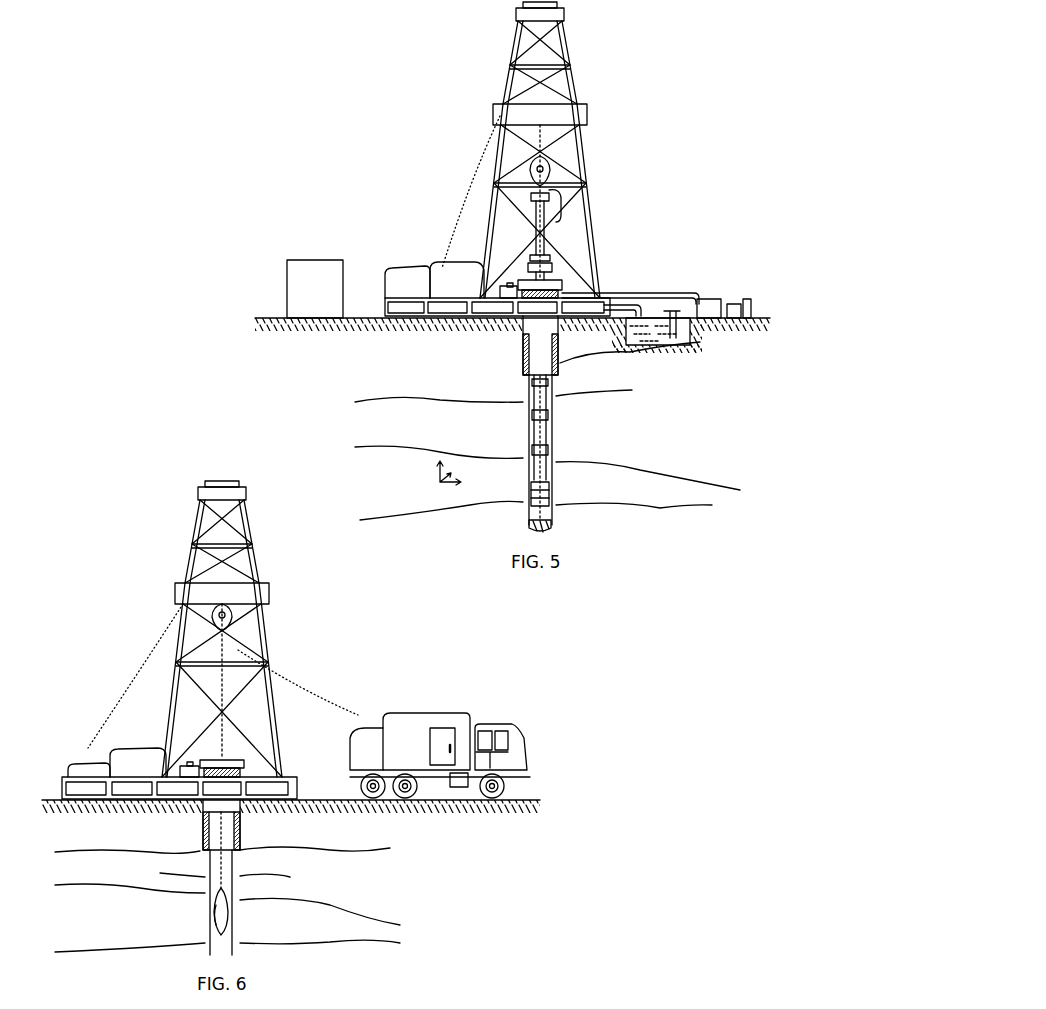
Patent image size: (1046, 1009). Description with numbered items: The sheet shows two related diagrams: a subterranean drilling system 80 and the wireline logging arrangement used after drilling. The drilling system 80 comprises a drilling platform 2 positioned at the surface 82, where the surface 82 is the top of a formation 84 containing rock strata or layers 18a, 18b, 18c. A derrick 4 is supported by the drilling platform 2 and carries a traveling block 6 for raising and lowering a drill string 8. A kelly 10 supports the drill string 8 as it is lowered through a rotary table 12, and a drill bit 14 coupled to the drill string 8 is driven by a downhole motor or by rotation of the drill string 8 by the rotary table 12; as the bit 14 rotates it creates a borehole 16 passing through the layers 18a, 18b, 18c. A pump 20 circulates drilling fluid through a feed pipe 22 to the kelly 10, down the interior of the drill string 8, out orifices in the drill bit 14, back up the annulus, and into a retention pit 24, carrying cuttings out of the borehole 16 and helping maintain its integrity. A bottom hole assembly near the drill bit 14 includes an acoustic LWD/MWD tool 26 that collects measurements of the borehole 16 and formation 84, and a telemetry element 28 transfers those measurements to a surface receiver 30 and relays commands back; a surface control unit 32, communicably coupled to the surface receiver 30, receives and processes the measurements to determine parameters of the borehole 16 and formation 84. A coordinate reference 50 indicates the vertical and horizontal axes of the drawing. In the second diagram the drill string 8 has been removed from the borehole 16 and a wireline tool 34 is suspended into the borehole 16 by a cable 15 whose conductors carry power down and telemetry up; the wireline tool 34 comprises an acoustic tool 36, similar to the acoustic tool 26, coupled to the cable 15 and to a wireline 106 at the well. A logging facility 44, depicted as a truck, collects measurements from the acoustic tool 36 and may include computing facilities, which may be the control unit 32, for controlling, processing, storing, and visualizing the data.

In FIG. 5, the drilling platform 2 is at (383, 306).
In FIG. 6, the drilling platform 2 is at (298, 790).
In FIG. 5, the derrick 4 is at (578, 82).
In FIG. 6, the derrick 4 is at (280, 706).
In FIG. 5, the traveling block 6 is at (548, 178).
In FIG. 6, the traveling block 6 is at (236, 608).
In FIG. 5, the drill string 8 is at (540, 390).
In FIG. 5, the kelly 10 is at (540, 210).
In FIG. 5, the rotary table 12 is at (556, 283).
In FIG. 6, the rotary table 12 is at (240, 765).
In FIG. 5, the drill bit 14 is at (551, 530).
In FIG. 6, the cable 15 is at (222, 832).
In FIG. 5, the borehole 16 is at (554, 410).
In FIG. 6, the borehole 16 is at (228, 867).
In FIG. 5, the rock strata or layer 18a is at (382, 473).
In FIG. 6, the rock strata or layer 18a is at (378, 840).
In FIG. 5, the rock strata or layer 18b is at (493, 408).
In FIG. 6, the rock strata or layer 18b is at (84, 878).
In FIG. 5, the rock strata or layer 18c is at (680, 384).
In FIG. 6, the rock strata or layer 18c is at (84, 941).
In FIG. 5, the pump 20 is at (708, 298).
In FIG. 5, the feed pipe 22 is at (650, 292).
In FIG. 5, the retention pit 24 is at (664, 340).
In FIG. 5, the acoustic LWD/MWD tool 26 is at (532, 500).
In FIG. 5, the telemetry element 28 is at (552, 484).
In FIG. 5, the surface receiver 30 is at (545, 268).
In FIG. 5, the surface control unit 32 is at (315, 289).
In FIG. 6, the wireline tool 34 is at (215, 902).
In FIG. 6, the acoustic tool 36 is at (215, 918).
In FIG. 6, the logging facility 44 is at (422, 713).
In FIG. 5, the coordinate system 50 is at (432, 478).
In FIG. 5, the drilling system 80 is at (668, 126).
In FIG. 5, the surface 82 is at (272, 318).
In FIG. 6, the surface 82 is at (62, 800).
In FIG. 5, the formation 84 is at (309, 377).
In FIG. 6, the formation 84 is at (496, 860).
In FIG. 6, the wireline cable 106 is at (276, 878).